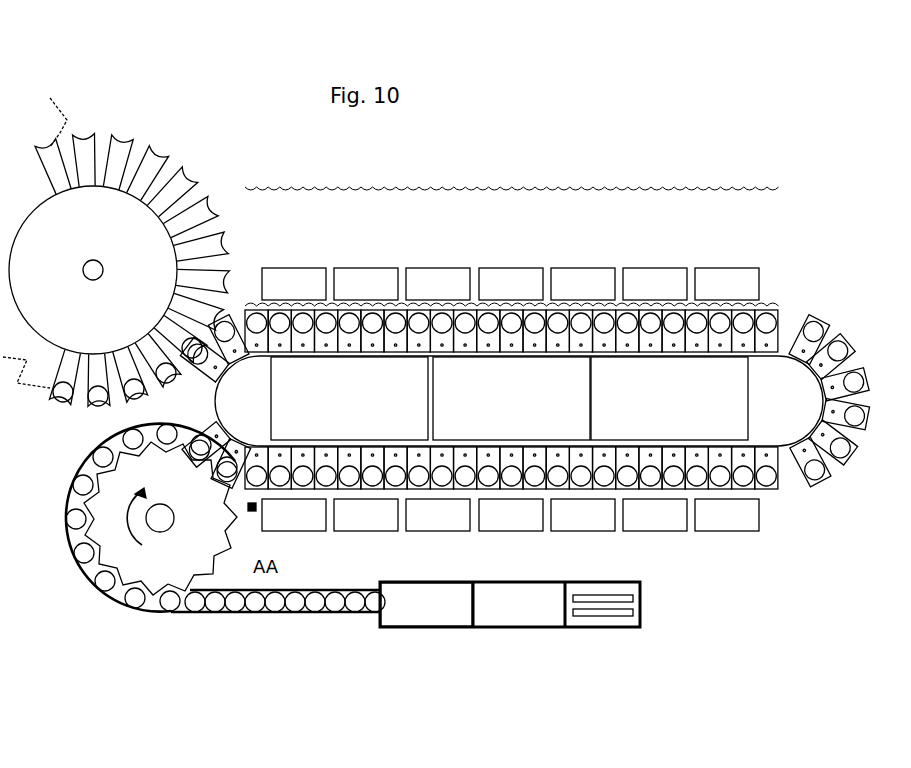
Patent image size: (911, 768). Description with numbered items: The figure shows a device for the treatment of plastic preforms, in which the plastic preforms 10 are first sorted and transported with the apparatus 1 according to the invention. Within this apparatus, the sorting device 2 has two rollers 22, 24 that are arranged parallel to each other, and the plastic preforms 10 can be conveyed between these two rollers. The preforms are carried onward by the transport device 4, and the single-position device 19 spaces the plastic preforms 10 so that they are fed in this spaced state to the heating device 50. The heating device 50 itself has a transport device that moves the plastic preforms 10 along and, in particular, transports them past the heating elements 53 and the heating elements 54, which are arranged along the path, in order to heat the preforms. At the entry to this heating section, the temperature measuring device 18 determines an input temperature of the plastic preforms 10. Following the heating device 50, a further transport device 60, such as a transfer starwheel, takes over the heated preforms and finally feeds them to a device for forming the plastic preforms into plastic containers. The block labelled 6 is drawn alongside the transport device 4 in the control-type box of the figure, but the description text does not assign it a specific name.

The further transport device 60 is at (148, 128).
The heating device 50 is at (568, 170).
The heating elements 54 is at (298, 275).
The heating elements 53 is at (320, 523).
The single-position device 19 is at (105, 614).
The temperature measuring device 18 is at (250, 512).
The plastic preforms 10 is at (541, 652).
The computing unit 6 is at (426, 604).
The transport device 4 is at (519, 604).
The sorting device 2 is at (642, 658).
The roller 22 is at (633, 598).
The roller 24 is at (622, 612).
The apparatus 1 is at (541, 661).